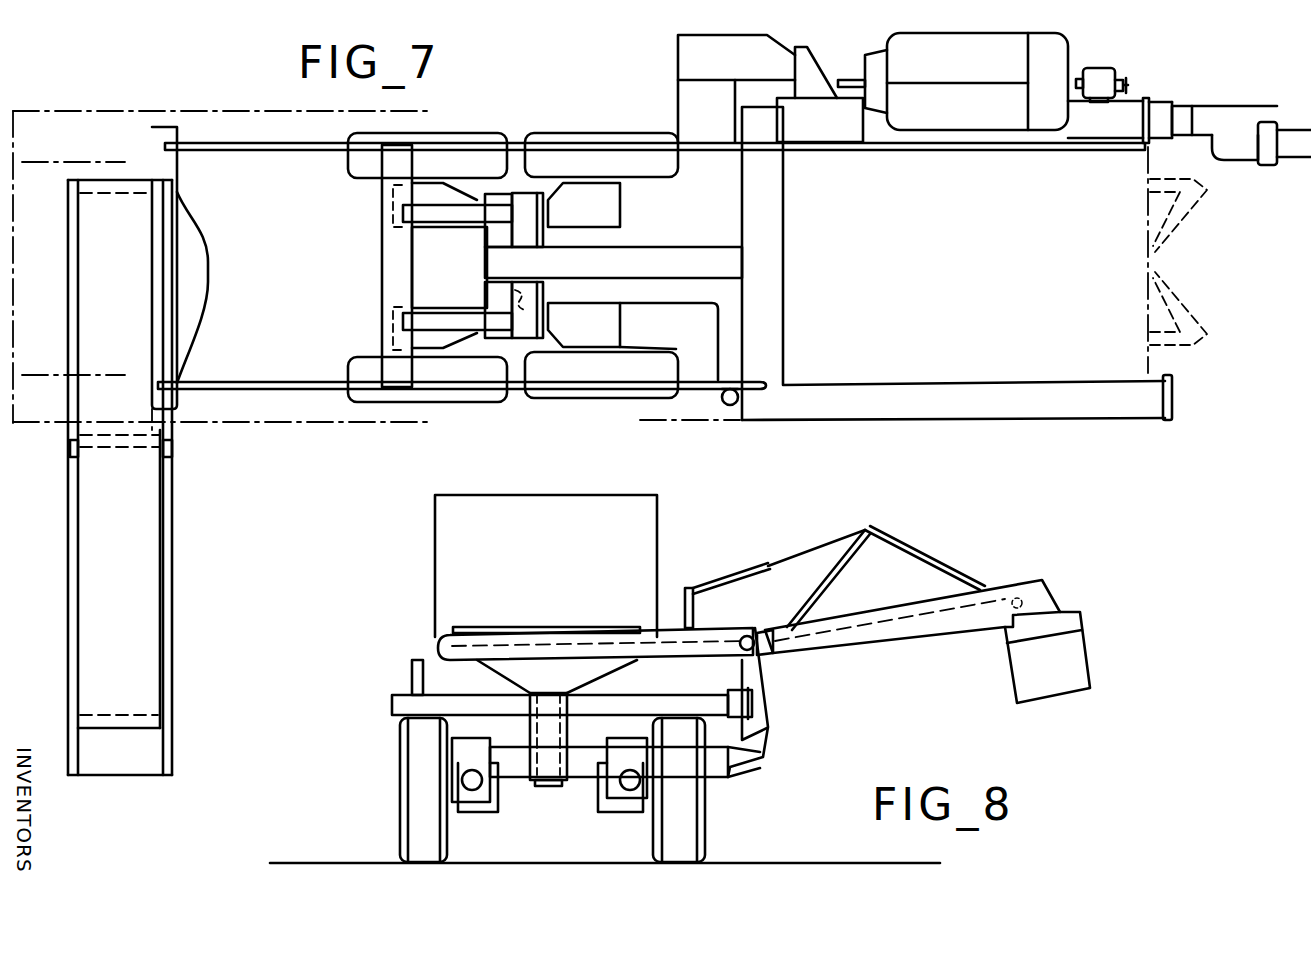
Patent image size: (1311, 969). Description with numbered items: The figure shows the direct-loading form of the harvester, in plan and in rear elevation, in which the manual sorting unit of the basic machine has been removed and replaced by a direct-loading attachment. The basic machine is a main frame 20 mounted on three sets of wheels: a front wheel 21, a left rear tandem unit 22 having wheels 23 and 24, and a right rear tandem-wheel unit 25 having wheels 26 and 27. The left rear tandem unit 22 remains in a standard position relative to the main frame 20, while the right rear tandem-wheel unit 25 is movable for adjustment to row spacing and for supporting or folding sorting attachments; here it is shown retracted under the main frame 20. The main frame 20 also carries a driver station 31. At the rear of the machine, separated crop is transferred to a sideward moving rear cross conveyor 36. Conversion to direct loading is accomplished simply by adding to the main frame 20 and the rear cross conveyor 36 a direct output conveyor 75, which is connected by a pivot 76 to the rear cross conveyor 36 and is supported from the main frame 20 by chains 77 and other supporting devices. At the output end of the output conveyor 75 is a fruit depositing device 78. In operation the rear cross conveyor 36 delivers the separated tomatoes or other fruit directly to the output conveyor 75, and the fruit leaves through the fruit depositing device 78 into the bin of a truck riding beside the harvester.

In FIG. 7, the main frame 20 is at (1018, 404).
In FIG. 8, the main frame 20 is at (643, 698).
In FIG. 7, the front wheel 21 is at (1250, 160).
In FIG. 7, the left rear tandem unit 22 is at (531, 133).
In FIG. 7, the wheel 23 is at (440, 133).
In FIG. 8, the wheel 23 is at (406, 845).
In FIG. 7, the wheel 24 is at (596, 133).
In FIG. 7, the right rear tandem-wheel unit 25 is at (531, 402).
In FIG. 7, the wheel 26 is at (443, 403).
In FIG. 8, the wheel 26 is at (695, 838).
In FIG. 7, the wheel 27 is at (621, 401).
In FIG. 7, the driver station 31 is at (723, 92).
In FIG. 7, the rear cross conveyor 36 is at (90, 293).
In FIG. 7, the direct output conveyor 75 is at (172, 574).
In FIG. 8, the direct output conveyor 75 is at (892, 632).
In FIG. 8, the pivot 76 is at (760, 656).
In FIG. 8, the chains 77 is at (866, 530).
In FIG. 7, the fruit depositing device 78 is at (157, 760).
In FIG. 8, the fruit depositing device 78 is at (1090, 667).